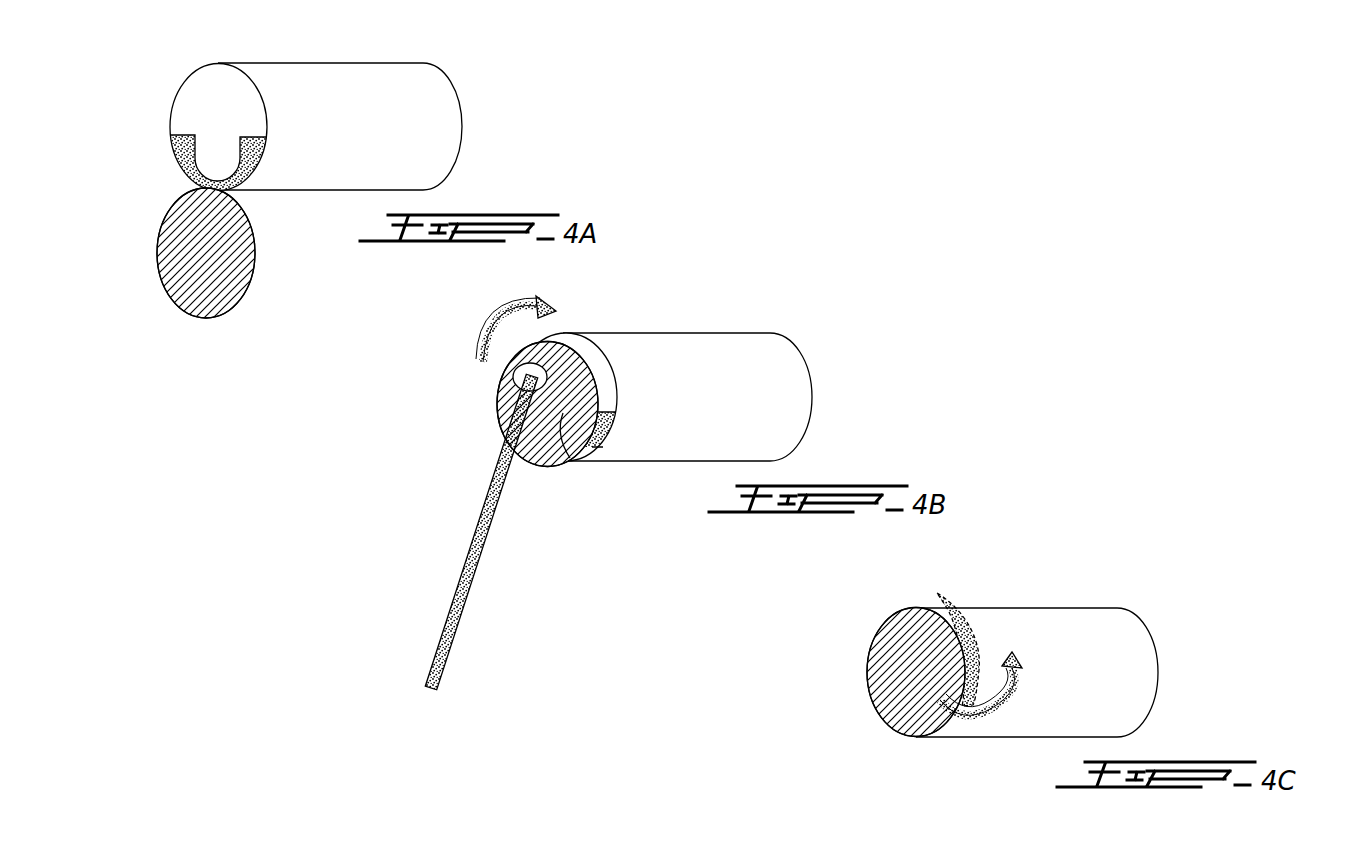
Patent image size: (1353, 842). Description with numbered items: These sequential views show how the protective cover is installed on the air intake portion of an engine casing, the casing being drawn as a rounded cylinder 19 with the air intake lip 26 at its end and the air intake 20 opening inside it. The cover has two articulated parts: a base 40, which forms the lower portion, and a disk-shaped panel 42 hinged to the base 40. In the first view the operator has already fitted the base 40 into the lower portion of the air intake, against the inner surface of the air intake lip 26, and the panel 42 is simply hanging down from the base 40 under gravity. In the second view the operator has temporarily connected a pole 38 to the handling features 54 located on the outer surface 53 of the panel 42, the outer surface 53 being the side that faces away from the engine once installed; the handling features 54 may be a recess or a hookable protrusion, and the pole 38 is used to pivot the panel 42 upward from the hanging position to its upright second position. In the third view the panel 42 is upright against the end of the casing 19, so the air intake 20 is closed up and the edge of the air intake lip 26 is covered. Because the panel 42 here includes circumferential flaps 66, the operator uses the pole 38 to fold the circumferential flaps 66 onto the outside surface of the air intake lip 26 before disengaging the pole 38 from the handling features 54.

In FIG. 4A, the container body 19 is at (404, 100).
In FIG. 4B, the container body 19 is at (725, 368).
In FIG. 4C, the container body 19 is at (1097, 633).
In FIG. 4A, the air intake 20 is at (229, 115).
In FIG. 4A, the air intake lip 26 is at (170, 104).
In FIG. 4B, the air intake lip 26 is at (613, 380).
In FIG. 4B, the pole 38 is at (474, 542).
In FIG. 4A, the base 40 is at (257, 157).
In FIG. 4B, the base 40 is at (608, 430).
In FIG. 4A, the panel 42 is at (226, 267).
In FIG. 4B, the panel 42 is at (522, 458).
In FIG. 4C, the panel 42 is at (897, 690).
In FIG. 4B, the outer surface 53 is at (569, 457).
In FIG. 4B, the handling features 54 is at (513, 371).
In FIG. 4C, the circumferential flaps 66 is at (973, 632).